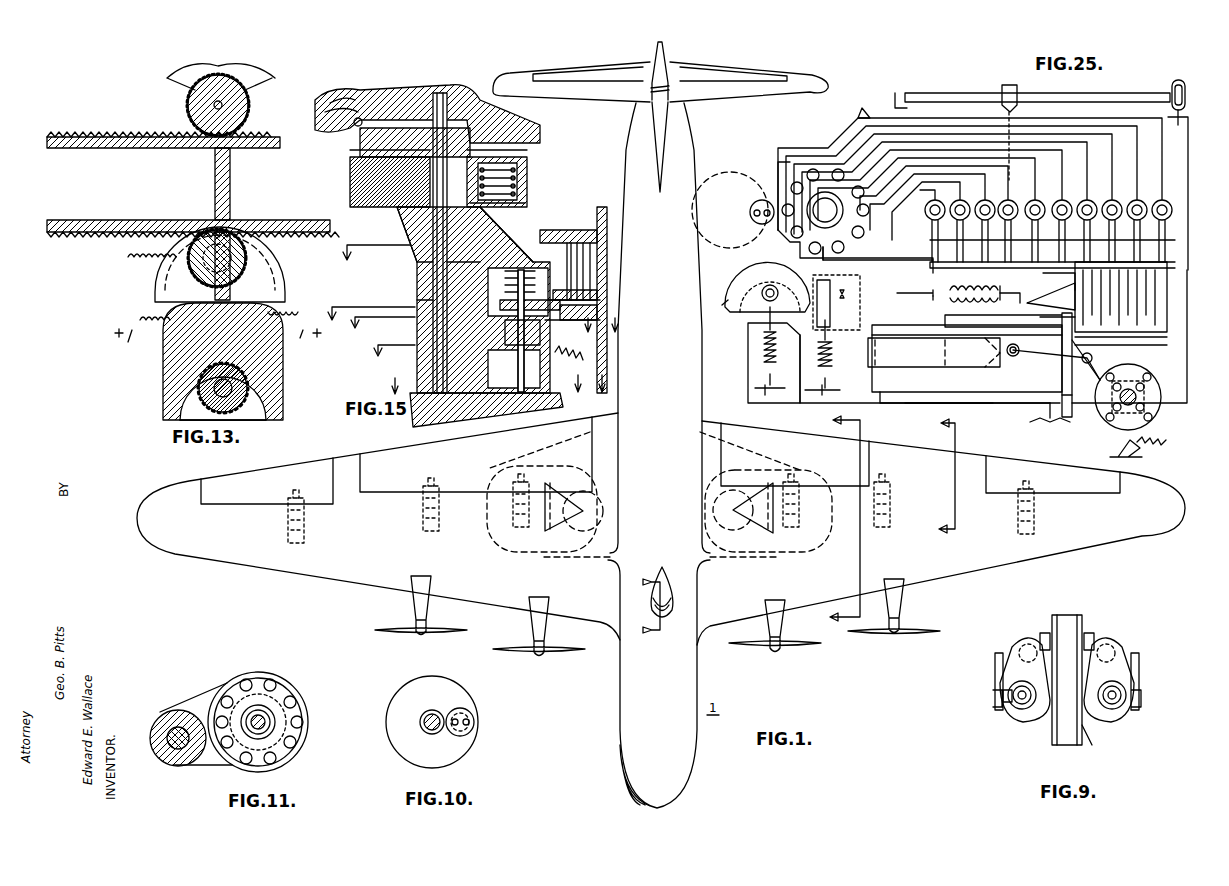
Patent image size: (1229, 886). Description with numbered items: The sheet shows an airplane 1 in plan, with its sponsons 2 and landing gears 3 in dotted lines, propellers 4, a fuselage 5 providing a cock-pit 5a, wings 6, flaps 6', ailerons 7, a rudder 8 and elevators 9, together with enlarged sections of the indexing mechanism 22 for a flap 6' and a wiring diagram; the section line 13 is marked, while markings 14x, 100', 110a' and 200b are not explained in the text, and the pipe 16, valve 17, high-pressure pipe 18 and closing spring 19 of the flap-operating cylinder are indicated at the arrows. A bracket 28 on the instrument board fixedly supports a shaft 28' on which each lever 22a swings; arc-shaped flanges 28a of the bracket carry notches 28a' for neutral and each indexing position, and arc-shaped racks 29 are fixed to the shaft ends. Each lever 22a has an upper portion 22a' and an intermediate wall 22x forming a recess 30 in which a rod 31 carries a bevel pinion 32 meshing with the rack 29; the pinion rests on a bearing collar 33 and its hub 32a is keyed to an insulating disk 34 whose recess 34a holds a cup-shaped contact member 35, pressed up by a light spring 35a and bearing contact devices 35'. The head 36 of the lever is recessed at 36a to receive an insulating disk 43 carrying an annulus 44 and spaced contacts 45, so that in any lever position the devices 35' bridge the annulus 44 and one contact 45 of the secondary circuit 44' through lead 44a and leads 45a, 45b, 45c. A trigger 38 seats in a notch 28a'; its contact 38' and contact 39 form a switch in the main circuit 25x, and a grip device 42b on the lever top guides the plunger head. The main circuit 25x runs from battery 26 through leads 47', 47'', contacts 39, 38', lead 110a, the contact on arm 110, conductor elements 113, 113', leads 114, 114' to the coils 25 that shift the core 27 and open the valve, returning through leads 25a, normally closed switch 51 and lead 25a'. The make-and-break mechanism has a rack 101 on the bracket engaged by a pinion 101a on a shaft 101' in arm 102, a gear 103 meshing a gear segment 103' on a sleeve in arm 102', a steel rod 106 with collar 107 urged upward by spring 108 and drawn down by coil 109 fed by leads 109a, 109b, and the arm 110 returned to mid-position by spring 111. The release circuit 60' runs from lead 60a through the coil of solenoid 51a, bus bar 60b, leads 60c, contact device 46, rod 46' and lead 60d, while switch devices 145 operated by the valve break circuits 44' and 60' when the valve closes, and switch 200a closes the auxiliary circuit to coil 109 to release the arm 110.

In FIG. 1, the airplane 1 is at (660, 330).
In FIG. 1, the sponsons 2 is at (798, 550).
In FIG. 1, the landing gears 3 is at (560, 527).
In FIG. 1, the propellers 4 is at (866, 634).
In FIG. 1, the fuselage 5 is at (622, 707).
In FIG. 1, the cock-pit 5a is at (670, 585).
In FIG. 1, the wings 6 is at (661, 529).
In FIG. 1, the flaps 6' is at (634, 454).
In FIG. 1, the ailerons 7 is at (1075, 485).
In FIG. 1, the rudder 8 is at (667, 63).
In FIG. 1, the elevators 9 is at (745, 75).
In FIG. 15, the mounting plate 13 is at (615, 205).
In FIG. 1, the nacelle switch 14x is at (1018, 522).
In FIG. 15, the pipe 16 is at (474, 329).
In FIG. 15, the valve 17 is at (471, 335).
In FIG. 15, the pipe 18 is at (486, 375).
In FIG. 15, the coiled spring 19 is at (480, 390).
In FIG. 25, the coiled spring 19 is at (1148, 452).
In FIG. 11, the indexing mechanism 22 is at (245, 708).
In FIG. 9, the lever 22a is at (1061, 690).
In FIG. 15, the upper portion of lever 22a' is at (445, 224).
In FIG. 13, the intermediate wall 22x is at (280, 420).
In FIG. 15, the intermediate wall 22x is at (417, 298).
In FIG. 11, the intermediate wall 22x is at (172, 712).
In FIG. 9, the intermediate wall 22x is at (1112, 650).
In FIG. 25, the coil 25 is at (1030, 370).
In FIG. 25, the leads 25a is at (1024, 365).
In FIG. 25, the lead 25a' is at (1058, 309).
In FIG. 25, the main circuit 25x is at (1100, 384).
In FIG. 25, the battery 26 is at (1168, 265).
In FIG. 25, the core 27 is at (972, 352).
In FIG. 13, the bracket 28 is at (236, 224).
In FIG. 15, the bracket 28 is at (600, 287).
In FIG. 15, the shaft 28' is at (486, 425).
In FIG. 9, the arc shaped flanges 28a is at (1048, 687).
In FIG. 9, the notches 28a' is at (1098, 743).
In FIG. 9, the arc shaped racks 29 is at (1137, 665).
In FIG. 13, the recess 30 is at (170, 400).
In FIG. 15, the recess 30 is at (515, 220).
In FIG. 13, the rod 31 is at (245, 408).
In FIG. 15, the rod 31 is at (435, 250).
In FIG. 11, the rod 31 is at (250, 728).
In FIG. 10, the rod 31 is at (434, 732).
In FIG. 13, the bevel pinion 32 is at (200, 402).
In FIG. 15, the bevel pinion 32 is at (420, 240).
In FIG. 15, the hub 32a is at (410, 225).
In FIG. 10, the hub 32a is at (430, 711).
In FIG. 15, the bearing disk or collar 33 is at (417, 270).
In FIG. 15, the disk 34 is at (350, 198).
In FIG. 10, the disk 34 is at (405, 745).
In FIG. 15, the recess 34a is at (528, 172).
In FIG. 15, the contact member 35 is at (527, 201).
In FIG. 10, the contact member 35 is at (479, 726).
In FIG. 10, the contact devices 35' is at (483, 705).
In FIG. 15, the coiled spring 35a is at (527, 182).
In FIG. 15, the head 36 is at (540, 135).
In FIG. 15, the recess 36a is at (370, 90).
In FIG. 25, the trigger 38 is at (1050, 431).
In FIG. 25, the contact 38' is at (1068, 426).
In FIG. 25, the contact 39 is at (1060, 402).
In FIG. 9, the grip device 42b is at (1008, 697).
In FIG. 15, the disk 43 is at (350, 160).
In FIG. 11, the disk 43 is at (300, 705).
In FIG. 25, the annulus 44 is at (797, 208).
In FIG. 11, the annulus 44 is at (272, 715).
In FIG. 25, the secondary circuit 44' is at (855, 191).
In FIG. 15, the lead 44a is at (340, 110).
In FIG. 25, the lead 44a is at (870, 265).
In FIG. 15, the contacts 45 is at (530, 153).
In FIG. 25, the contacts 45 is at (812, 170).
In FIG. 11, the contacts 45 is at (292, 740).
In FIG. 15, the lead 45a is at (345, 130).
In FIG. 25, the lead 45a is at (861, 103).
In FIG. 25, the lead 45b is at (1165, 200).
In FIG. 25, the lead 45c is at (1040, 241).
In FIG. 25, the contact device 46 is at (998, 119).
In FIG. 25, the rod 46' is at (1032, 83).
In FIG. 25, the lead 47' is at (1069, 359).
In FIG. 25, the lead 47'' is at (1129, 353).
In FIG. 25, the normally closed switch 51 is at (1037, 296).
In FIG. 25, the solenoid 51a is at (1001, 301).
In FIG. 25, the circuit 60' is at (1176, 193).
In FIG. 25, the lead 60a is at (1072, 277).
In FIG. 25, the bus bar 60b is at (1018, 265).
In FIG. 25, the leads 60c is at (930, 232).
In FIG. 25, the lead 60d is at (1180, 120).
In FIG. 25, the rod 100' is at (915, 286).
In FIG. 13, the rack 101 is at (193, 193).
In FIG. 15, the rack 101 is at (619, 271).
In FIG. 15, the shaft 101' is at (617, 260).
In FIG. 13, the pinion 101a is at (250, 255).
In FIG. 15, the pinion 101a is at (575, 245).
In FIG. 15, the arm 102 is at (622, 271).
In FIG. 15, the arm 102' is at (601, 328).
In FIG. 15, the gear 103 is at (577, 299).
In FIG. 15, the gear segment 103' is at (609, 313).
In FIG. 15, the steel rod 106 is at (523, 405).
In FIG. 15, the collar 107 is at (562, 230).
In FIG. 15, the coiled spring 108 is at (600, 292).
In FIG. 15, the coil 109 is at (510, 400).
In FIG. 25, the lead 109a is at (860, 279).
In FIG. 25, the lead 109b is at (880, 300).
In FIG. 25, the arm 110 is at (828, 305).
In FIG. 25, the lead 110a is at (977, 418).
In FIG. 13, the sector housing 110a' is at (196, 264).
In FIG. 25, the spring 111 is at (835, 358).
In FIG. 25, the conductor element 113 is at (766, 287).
In FIG. 25, the conductor element 113' is at (750, 228).
In FIG. 13, the lead 114 is at (294, 342).
In FIG. 25, the lead 114 is at (855, 363).
In FIG. 13, the lead 114' is at (139, 341).
In FIG. 25, the lead 114' is at (782, 380).
In FIG. 25, the switch devices 145 is at (1143, 415).
In FIG. 25, the switch 200a is at (915, 307).
In FIG. 25, the spring 200b is at (971, 301).